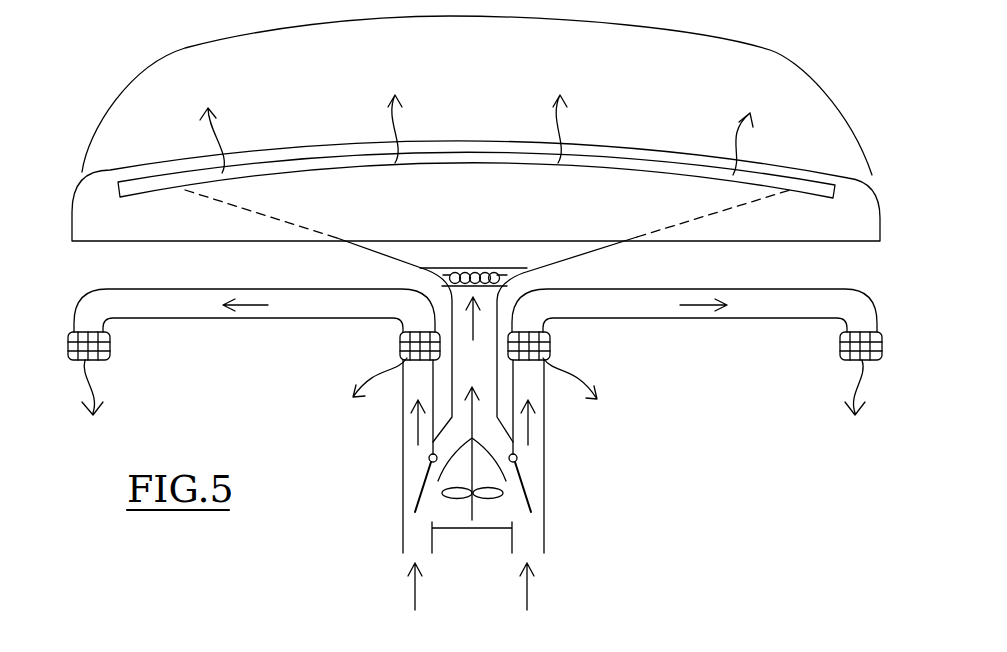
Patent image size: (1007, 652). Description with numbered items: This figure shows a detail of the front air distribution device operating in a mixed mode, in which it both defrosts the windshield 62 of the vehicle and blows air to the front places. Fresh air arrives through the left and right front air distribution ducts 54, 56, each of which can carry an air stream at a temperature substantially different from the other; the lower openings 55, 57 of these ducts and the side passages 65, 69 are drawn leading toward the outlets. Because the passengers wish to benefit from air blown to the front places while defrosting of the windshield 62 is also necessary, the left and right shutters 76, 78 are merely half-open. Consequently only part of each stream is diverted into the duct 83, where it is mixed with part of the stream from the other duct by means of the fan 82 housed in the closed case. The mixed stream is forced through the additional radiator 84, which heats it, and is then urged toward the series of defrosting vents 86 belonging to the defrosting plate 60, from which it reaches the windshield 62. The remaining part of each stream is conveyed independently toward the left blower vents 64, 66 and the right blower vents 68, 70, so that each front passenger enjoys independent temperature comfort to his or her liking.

The left front air distribution duct 54 is at (392, 554).
The first inlet opening 55 is at (425, 552).
The right front air distribution duct 56 is at (556, 533).
The second inlet opening 57 is at (533, 547).
The defrosting plate 60 is at (118, 225).
The windshield 62 is at (675, 58).
The left blower 64 is at (73, 338).
The left air duct 65 is at (173, 303).
The left blower 66 is at (400, 342).
The right blower 68 is at (550, 344).
The right air duct 69 is at (765, 308).
The right blower 70 is at (842, 343).
The left shutter 76 is at (425, 485).
The right shutter 78 is at (523, 492).
The fan 82 is at (472, 505).
The duct 83 is at (490, 320).
The additional radiator 84 is at (457, 272).
The defrosting vents 86 is at (138, 183).